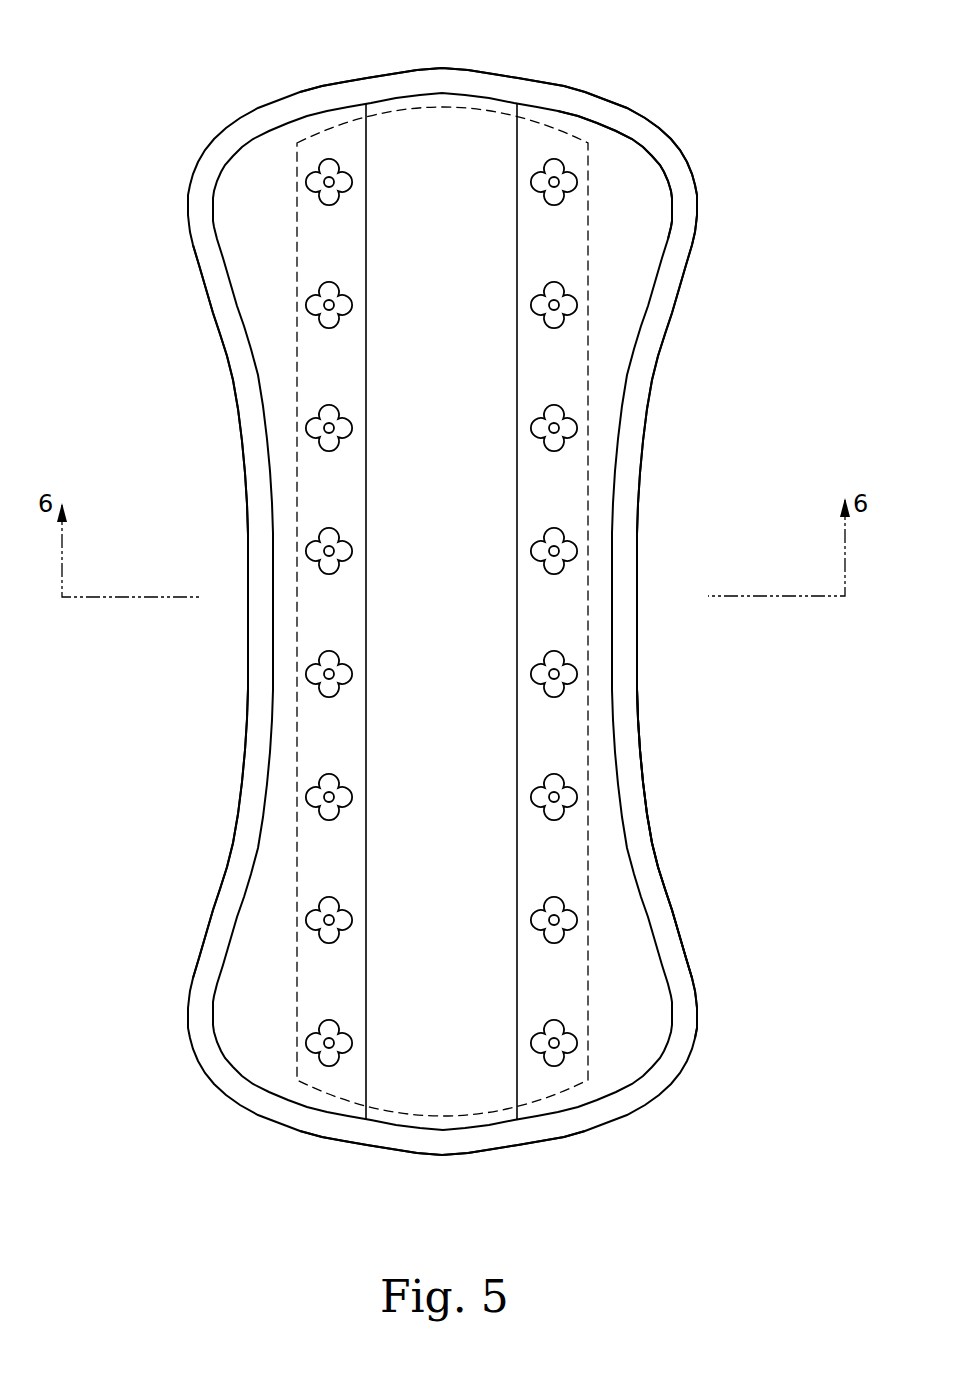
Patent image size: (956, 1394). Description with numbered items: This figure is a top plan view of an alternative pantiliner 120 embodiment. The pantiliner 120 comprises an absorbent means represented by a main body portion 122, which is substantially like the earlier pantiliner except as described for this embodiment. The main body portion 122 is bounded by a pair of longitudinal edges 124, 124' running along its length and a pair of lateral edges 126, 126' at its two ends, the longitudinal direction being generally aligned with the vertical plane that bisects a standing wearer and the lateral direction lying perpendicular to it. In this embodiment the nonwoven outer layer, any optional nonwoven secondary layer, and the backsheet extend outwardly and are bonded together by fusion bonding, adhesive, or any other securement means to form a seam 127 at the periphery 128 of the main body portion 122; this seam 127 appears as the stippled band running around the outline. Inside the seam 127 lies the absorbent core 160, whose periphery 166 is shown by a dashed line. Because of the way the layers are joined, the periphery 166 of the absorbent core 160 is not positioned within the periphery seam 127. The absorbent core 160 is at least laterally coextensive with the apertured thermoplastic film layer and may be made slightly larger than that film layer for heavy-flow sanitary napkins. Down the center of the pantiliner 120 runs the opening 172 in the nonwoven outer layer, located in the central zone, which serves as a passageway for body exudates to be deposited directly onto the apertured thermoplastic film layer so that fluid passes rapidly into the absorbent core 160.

The pantiliner 120 is at (200, 114).
The main body portion 122 is at (303, 90).
The longitudinal edge 124 is at (195, 611).
The longitudinal edge 124' is at (693, 611).
The lateral edge 126 is at (442, 51).
The lateral edge 126' is at (442, 1187).
The seam 127 is at (687, 211).
The periphery 128 is at (637, 687).
The absorbent core 160 is at (483, 152).
The periphery of the absorbent core 166 is at (588, 203).
The opening 172 is at (464, 507).